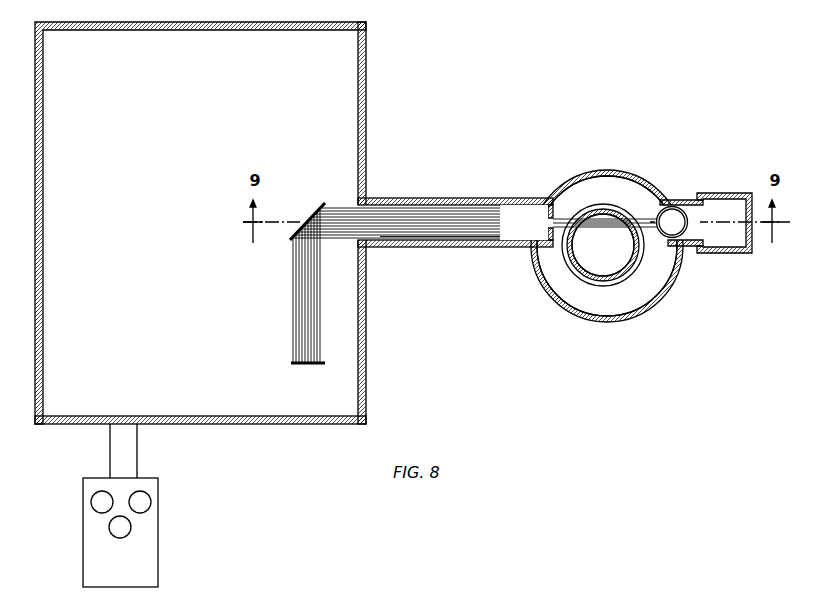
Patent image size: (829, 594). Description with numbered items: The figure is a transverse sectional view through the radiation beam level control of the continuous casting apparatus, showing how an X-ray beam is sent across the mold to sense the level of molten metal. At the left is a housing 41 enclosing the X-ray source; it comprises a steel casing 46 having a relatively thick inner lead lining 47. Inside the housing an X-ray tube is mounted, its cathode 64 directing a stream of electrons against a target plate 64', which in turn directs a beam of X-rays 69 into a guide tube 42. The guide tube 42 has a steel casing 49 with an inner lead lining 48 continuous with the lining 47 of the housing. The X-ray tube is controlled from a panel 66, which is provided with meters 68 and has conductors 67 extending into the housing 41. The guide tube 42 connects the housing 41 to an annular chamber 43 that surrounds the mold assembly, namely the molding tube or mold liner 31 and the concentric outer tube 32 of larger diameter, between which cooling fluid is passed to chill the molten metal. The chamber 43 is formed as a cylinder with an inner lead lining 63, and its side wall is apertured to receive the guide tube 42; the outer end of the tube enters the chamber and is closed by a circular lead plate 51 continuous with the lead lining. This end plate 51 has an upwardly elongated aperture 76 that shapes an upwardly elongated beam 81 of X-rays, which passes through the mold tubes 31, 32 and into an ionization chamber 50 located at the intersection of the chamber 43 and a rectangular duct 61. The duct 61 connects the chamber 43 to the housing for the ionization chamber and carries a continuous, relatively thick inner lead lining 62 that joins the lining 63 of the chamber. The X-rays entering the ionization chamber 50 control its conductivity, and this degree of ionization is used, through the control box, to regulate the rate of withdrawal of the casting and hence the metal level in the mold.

The housing 41 is at (182, 342).
The guide tube 42 is at (465, 198).
The annular chamber 43 is at (601, 170).
The steel casing 46 is at (321, 426).
The inner lead lining 47 is at (360, 367).
The inner lead lining 48 is at (433, 237).
The steel casing 49 is at (482, 247).
The ionization chamber 50 is at (676, 219).
The circular lead plate 51 is at (546, 243).
The molding tube 31 is at (602, 274).
The outer tube 32 is at (622, 273).
The rectangular duct 61 is at (693, 247).
The inner lead lining 62 is at (724, 249).
The inner lead lining 63 is at (627, 189).
The cathode 64 is at (308, 303).
The target plate 64' is at (307, 209).
The panel 66 is at (148, 570).
The conductors 67 is at (138, 462).
The meters 68 is at (131, 527).
The light beam 69 is at (385, 215).
The upwardly elongated aperture 76 is at (557, 227).
The beam of X-rays 81 is at (605, 221).